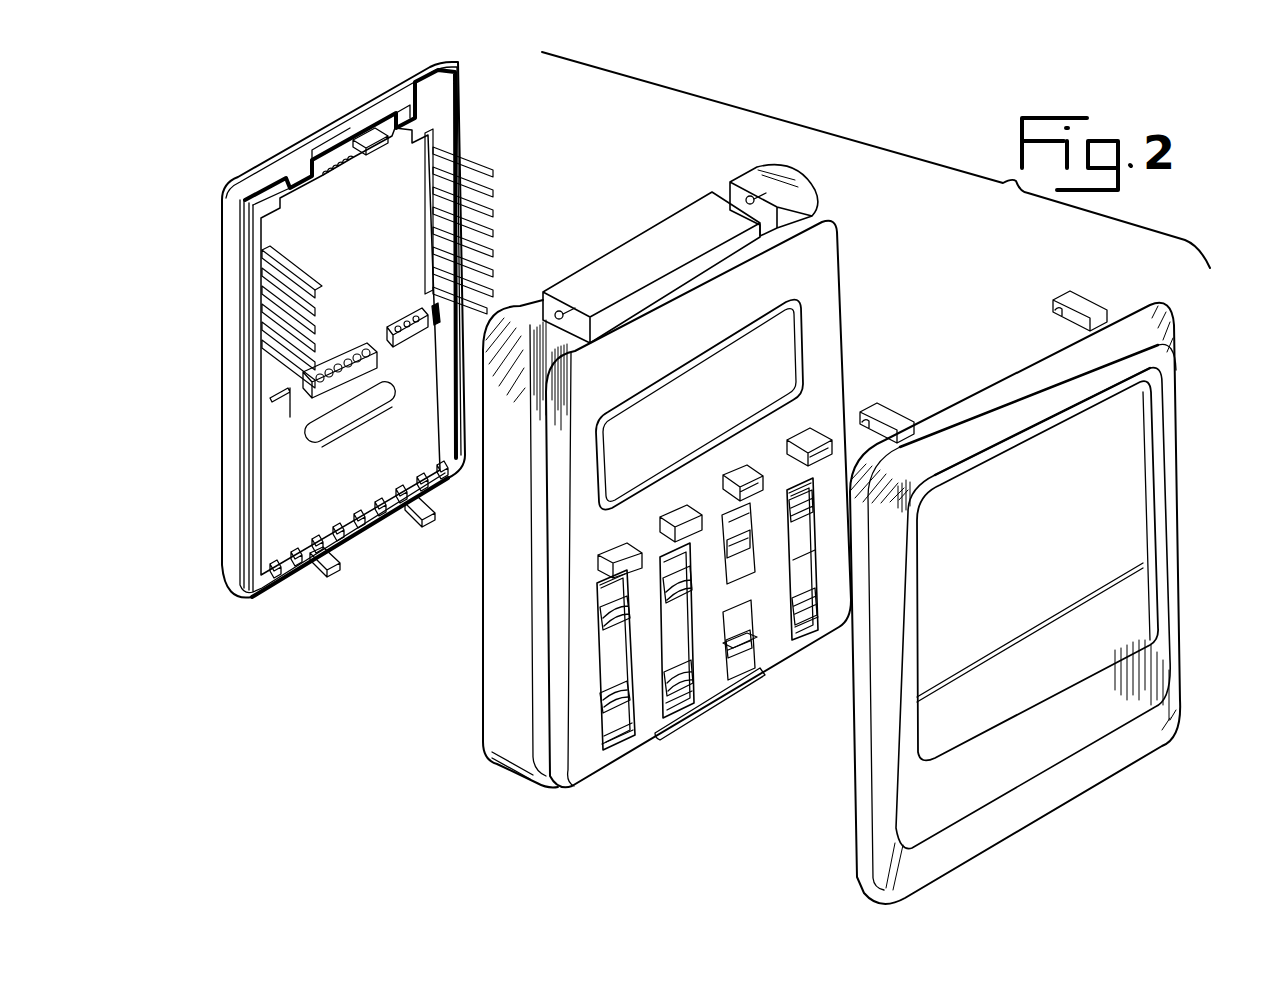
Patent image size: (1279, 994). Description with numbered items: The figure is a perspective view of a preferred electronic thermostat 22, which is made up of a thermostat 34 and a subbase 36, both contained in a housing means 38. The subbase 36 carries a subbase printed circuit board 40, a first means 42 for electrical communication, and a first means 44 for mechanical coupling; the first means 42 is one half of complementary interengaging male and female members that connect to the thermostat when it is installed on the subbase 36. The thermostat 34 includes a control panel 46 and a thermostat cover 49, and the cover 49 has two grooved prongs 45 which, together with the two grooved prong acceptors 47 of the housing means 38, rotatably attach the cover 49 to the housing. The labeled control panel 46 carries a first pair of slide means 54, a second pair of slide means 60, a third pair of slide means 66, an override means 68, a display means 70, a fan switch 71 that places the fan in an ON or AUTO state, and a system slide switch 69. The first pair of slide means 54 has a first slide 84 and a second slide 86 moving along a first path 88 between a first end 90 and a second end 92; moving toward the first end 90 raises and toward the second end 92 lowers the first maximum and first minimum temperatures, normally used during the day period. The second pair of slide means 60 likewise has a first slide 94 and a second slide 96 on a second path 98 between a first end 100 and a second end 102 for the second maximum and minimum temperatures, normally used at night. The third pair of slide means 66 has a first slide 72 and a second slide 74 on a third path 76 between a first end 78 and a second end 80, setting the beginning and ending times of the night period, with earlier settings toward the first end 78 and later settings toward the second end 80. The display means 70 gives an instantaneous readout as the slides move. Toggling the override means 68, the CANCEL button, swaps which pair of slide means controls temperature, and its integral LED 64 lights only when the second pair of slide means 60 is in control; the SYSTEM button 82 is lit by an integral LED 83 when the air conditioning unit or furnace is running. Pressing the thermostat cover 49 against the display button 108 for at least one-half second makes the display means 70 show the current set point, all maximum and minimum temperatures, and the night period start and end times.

The electronic thermostat 22 is at (228, 725).
The thermostat 34 is at (485, 805).
The subbase 36 is at (193, 520).
The housing means 38 is at (235, 578).
The subbase printed circuit board 40 is at (272, 380).
The first means for electrical communication 42 is at (300, 277).
The first means for mechanical coupling 44 is at (366, 130).
The grooved prongs 45 is at (1070, 300).
The control panel 46 is at (840, 313).
The grooved prong acceptors 47 is at (545, 298).
The thermostat cover 49 is at (1185, 558).
The first pair of slide means 54 is at (605, 670).
The second pair of slide means 60 is at (665, 628).
The LED 64 is at (895, 412).
The third pair of slide means 66 is at (790, 548).
The override means 68 is at (826, 447).
The system slide switch 69 is at (682, 480).
The display means 70 is at (782, 357).
The fan switch 71 is at (752, 640).
The first slide 72 is at (812, 495).
The second slide 74 is at (820, 625).
The third path 76 is at (800, 558).
The first end 78 is at (793, 495).
The second end 80 is at (805, 630).
The SYSTEM button 82 is at (700, 472).
The LED 83 is at (762, 470).
The first slide 84 is at (600, 612).
The second slide 86 is at (608, 752).
The first path 88 is at (620, 650).
The first end 90 is at (603, 592).
The second end 92 is at (617, 745).
The first slide 94 is at (735, 580).
The second slide 96 is at (680, 705).
The second path 98 is at (672, 625).
The first end 100 is at (655, 560).
The second end 102 is at (680, 708).
The display button 108 is at (718, 706).